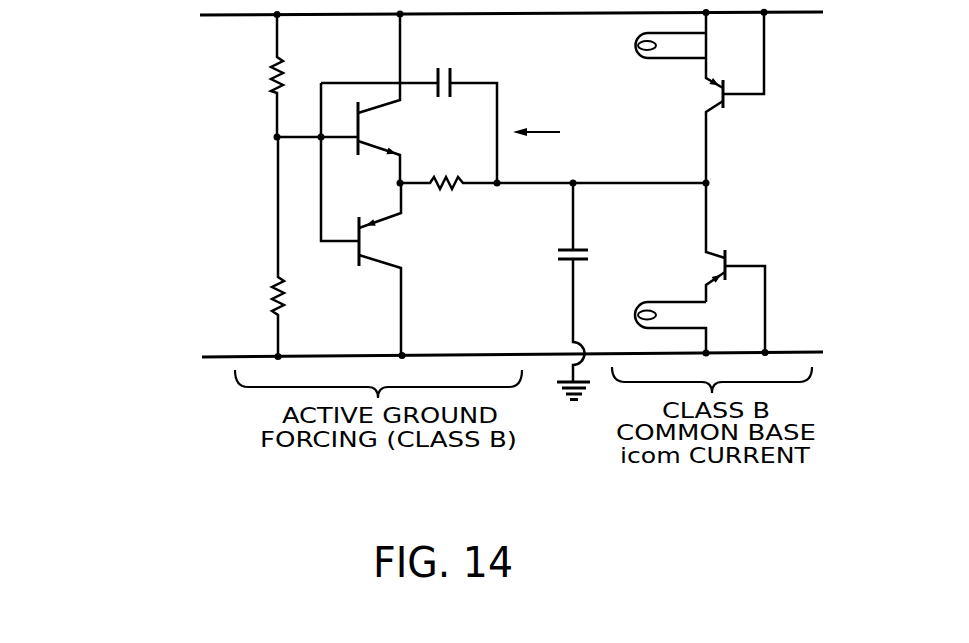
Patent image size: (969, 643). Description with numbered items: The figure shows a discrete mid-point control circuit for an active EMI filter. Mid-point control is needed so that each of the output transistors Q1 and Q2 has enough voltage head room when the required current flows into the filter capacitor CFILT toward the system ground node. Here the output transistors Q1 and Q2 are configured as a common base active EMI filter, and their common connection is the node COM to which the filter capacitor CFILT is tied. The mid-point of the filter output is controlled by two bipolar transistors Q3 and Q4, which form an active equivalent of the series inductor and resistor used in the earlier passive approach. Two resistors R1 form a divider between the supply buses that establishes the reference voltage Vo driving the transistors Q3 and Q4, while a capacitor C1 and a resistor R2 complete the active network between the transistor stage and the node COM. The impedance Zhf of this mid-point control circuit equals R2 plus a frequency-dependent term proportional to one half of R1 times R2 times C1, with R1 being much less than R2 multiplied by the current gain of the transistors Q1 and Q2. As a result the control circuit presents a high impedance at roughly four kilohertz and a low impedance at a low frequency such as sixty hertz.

The resistor R1 is at (261, 186).
The output voltage node Vo is at (297, 142).
The bipolar transistor Q3 is at (382, 98).
The bipolar transistor Q4 is at (383, 269).
The capacitor C1 is at (409, 109).
The resistor R2 is at (448, 166).
The impedance of the midpoint control circuit Zhf is at (565, 128).
The common node COM is at (601, 166).
The filter capacitor CFILT is at (600, 291).
The output transistor Q1 is at (703, 97).
The output transistor Q2 is at (702, 268).